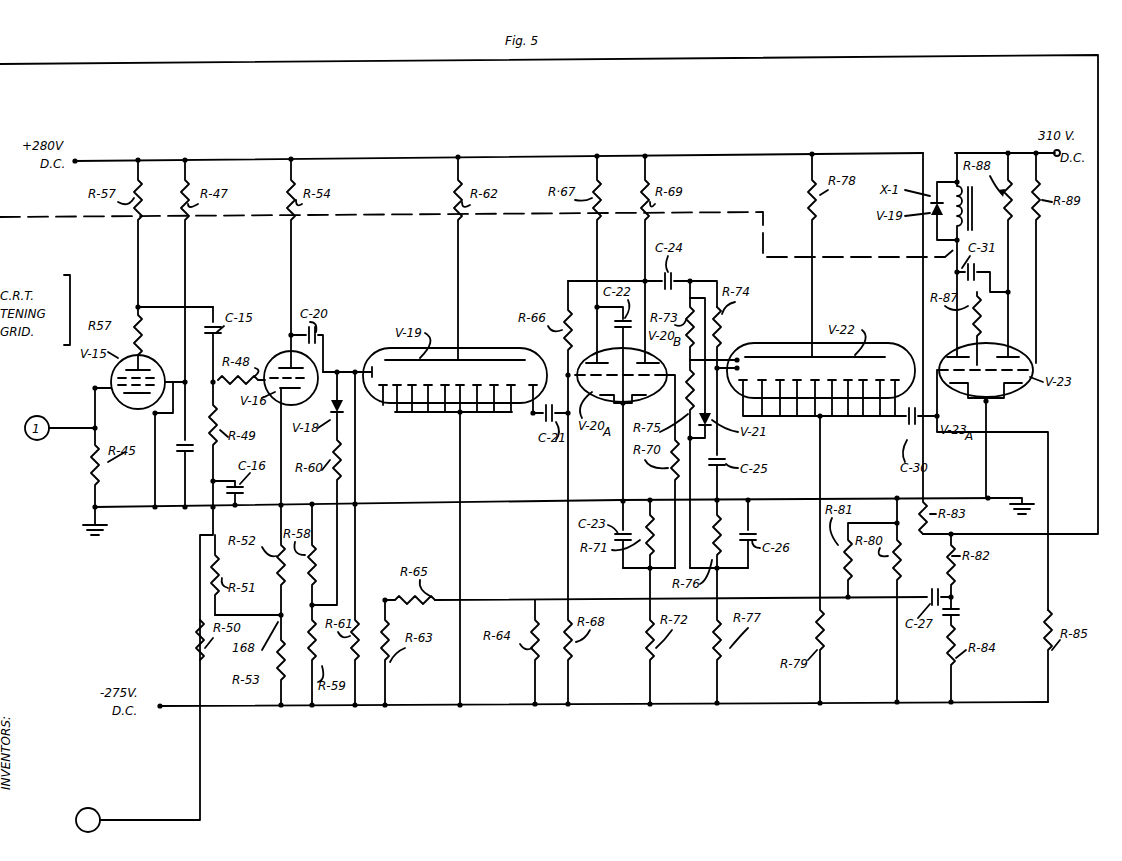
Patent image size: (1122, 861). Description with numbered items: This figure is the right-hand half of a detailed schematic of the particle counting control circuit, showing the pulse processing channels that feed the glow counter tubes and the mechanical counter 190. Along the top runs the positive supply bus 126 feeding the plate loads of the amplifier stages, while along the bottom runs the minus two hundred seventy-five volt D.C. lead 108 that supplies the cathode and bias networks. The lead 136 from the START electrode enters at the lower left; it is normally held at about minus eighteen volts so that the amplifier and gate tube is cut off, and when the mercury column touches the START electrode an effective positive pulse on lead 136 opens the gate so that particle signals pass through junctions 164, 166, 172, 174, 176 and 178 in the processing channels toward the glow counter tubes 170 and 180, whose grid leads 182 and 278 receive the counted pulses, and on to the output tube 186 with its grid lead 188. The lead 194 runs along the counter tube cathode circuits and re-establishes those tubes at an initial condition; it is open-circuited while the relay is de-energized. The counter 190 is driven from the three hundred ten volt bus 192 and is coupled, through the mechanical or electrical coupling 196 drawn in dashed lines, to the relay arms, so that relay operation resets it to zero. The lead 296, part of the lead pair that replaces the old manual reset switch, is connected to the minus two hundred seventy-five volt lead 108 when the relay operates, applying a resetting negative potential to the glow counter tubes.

The -275 volt D.C. lead 108 is at (490, 705).
The positive supply bus (+280 V) 126 is at (605, 154).
The lead associated with the START electrode 136 is at (123, 820).
The ground junction 164 is at (155, 513).
The brightening grid junction 166 is at (128, 306).
The beam deflection tube V-19 170 is at (418, 323).
The signal coupling junction 172 is at (340, 368).
The bias junction 174 is at (300, 604).
The cathode of V-20A 176 is at (610, 428).
The cathode circuit junction 178 is at (645, 572).
The beam deflection tube V-22 180 is at (876, 324).
The grid lead of V-22 182 is at (742, 371).
The tube V-23 186 is at (1028, 393).
The grid lead of V-23A 188 is at (935, 432).
The mechanical counter 190 is at (919, 236).
The 310 V supply bus 192 is at (996, 152).
The lead for re-establishing the counter tubes 194 is at (500, 600).
The mechanical or electrical coupling 196 is at (65, 216).
The grid lead of V-22 278 is at (738, 356).
The lead 296 is at (890, 62).